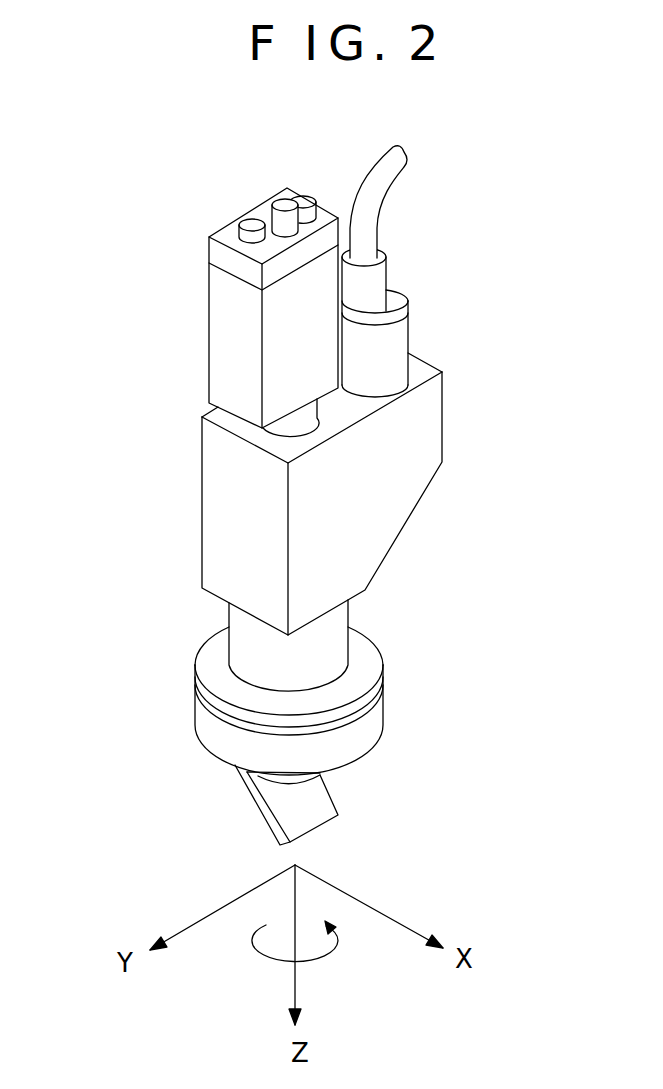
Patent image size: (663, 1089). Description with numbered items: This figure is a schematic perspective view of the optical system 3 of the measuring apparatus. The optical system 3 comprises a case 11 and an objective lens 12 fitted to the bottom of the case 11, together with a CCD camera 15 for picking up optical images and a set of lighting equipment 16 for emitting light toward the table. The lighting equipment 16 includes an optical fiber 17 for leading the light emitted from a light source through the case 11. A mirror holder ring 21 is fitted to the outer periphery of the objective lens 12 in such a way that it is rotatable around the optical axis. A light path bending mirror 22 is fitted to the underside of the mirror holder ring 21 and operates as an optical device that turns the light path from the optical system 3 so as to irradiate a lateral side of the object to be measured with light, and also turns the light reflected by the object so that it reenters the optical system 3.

The optical system 3 is at (100, 248).
The case 11 is at (412, 498).
The objective lens 12 is at (322, 777).
The CCD camera 15 is at (222, 349).
The lighting equipment 16 is at (458, 292).
The optical fiber 17 is at (387, 180).
The mirror holder ring 21 is at (200, 715).
The light path bending mirror 22 is at (263, 812).